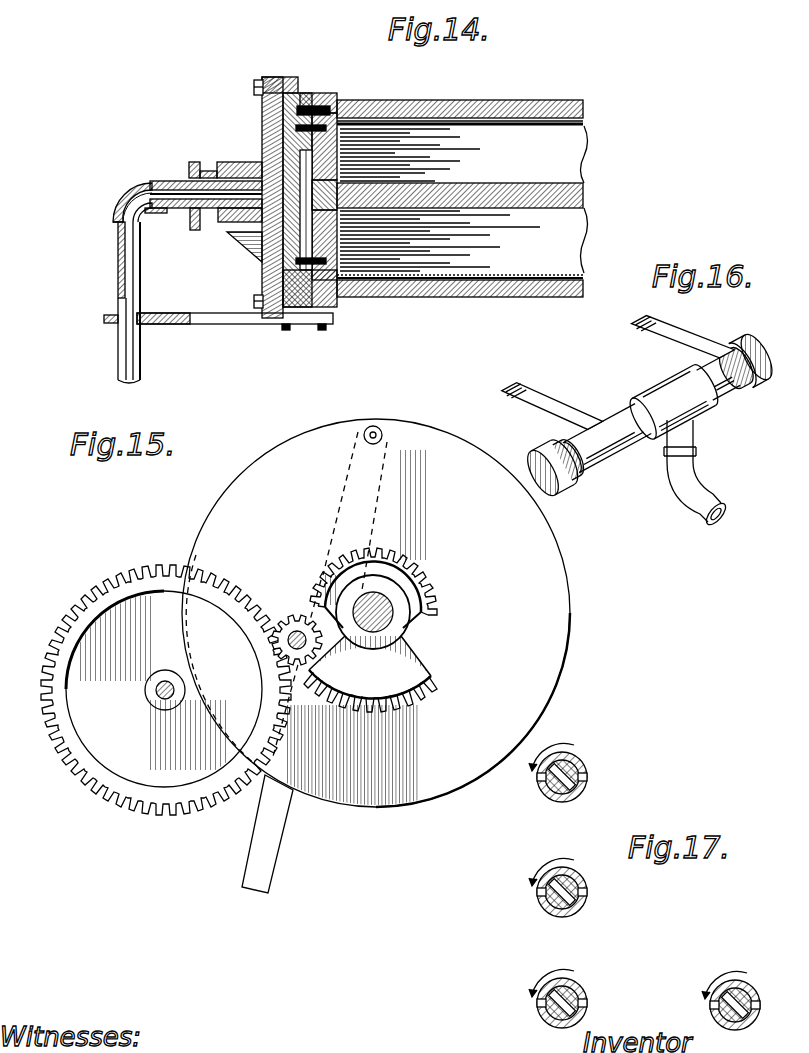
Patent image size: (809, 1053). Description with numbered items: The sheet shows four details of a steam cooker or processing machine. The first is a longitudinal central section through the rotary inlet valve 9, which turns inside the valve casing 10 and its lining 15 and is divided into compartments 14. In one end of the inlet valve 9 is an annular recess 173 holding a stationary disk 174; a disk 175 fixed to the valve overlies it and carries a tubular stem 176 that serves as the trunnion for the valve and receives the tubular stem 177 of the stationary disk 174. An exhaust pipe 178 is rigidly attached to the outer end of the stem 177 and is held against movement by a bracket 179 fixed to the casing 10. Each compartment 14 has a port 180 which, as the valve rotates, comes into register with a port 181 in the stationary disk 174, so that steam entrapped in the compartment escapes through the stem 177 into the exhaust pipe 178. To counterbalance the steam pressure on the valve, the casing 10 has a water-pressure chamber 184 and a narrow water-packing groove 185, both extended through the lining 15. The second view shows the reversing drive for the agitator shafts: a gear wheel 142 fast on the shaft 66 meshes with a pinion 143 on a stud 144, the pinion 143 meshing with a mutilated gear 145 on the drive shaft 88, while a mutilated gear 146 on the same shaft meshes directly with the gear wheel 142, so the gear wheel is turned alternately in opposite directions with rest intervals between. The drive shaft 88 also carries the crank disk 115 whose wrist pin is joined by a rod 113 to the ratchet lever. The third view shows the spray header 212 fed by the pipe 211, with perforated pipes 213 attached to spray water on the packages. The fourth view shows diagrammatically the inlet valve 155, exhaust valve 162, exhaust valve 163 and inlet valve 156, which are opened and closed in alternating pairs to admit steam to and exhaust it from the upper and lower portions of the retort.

In FIG. 14, the valve casing 10 is at (483, 100).
In FIG. 14, the lining 15 is at (583, 122).
In FIG. 14, the compartments 14 is at (442, 200).
In FIG. 14, the inlet valve 9 is at (470, 195).
In FIG. 14, the annular recess 173 is at (338, 108).
In FIG. 14, the disk 175 is at (291, 82).
In FIG. 14, the groove or chamber 184 is at (321, 104).
In FIG. 14, the port 181 is at (267, 155).
In FIG. 14, the port 180 is at (340, 170).
In FIG. 14, the stationary disk 174 is at (340, 258).
In FIG. 14, the narrow groove 185 is at (338, 304).
In FIG. 14, the stem 176 is at (185, 162).
In FIG. 14, the tubular stem 177 is at (170, 212).
In FIG. 14, the exhaust pipe 178 is at (118, 283).
In FIG. 14, the bracket 179 is at (209, 316).
In FIG. 15, the crank disk 115 is at (560, 631).
In FIG. 15, the gear wheel 142 is at (128, 559).
In FIG. 15, the shaft 66 is at (159, 698).
In FIG. 15, the pinion 143 is at (318, 602).
In FIG. 15, the stud 144 is at (295, 618).
In FIG. 15, the mutilated gear 145 is at (423, 572).
In FIG. 15, the mutilated gear 146 is at (407, 712).
In FIG. 15, the drive shaft 88 is at (394, 621).
In FIG. 15, the rod 113 is at (271, 832).
In FIG. 16, the header 212 is at (642, 457).
In FIG. 16, the perforated pipes 213 is at (563, 411).
In FIG. 16, the pipe 211 is at (714, 506).
In FIG. 17, the inlet valve 155 is at (545, 796).
In FIG. 17, the exhaust valve 162 is at (545, 912).
In FIG. 17, the exhaust valve 163 is at (538, 1022).
In FIG. 17, the inlet valve 156 is at (712, 1020).